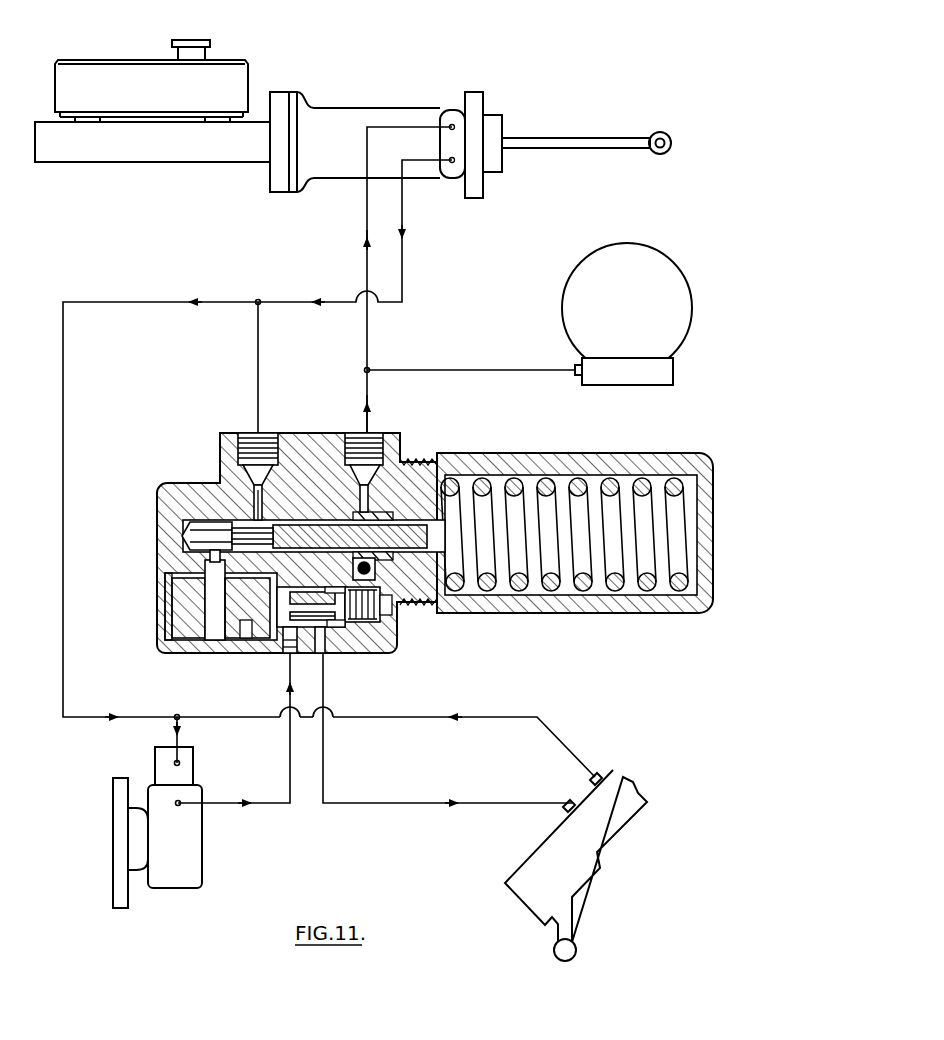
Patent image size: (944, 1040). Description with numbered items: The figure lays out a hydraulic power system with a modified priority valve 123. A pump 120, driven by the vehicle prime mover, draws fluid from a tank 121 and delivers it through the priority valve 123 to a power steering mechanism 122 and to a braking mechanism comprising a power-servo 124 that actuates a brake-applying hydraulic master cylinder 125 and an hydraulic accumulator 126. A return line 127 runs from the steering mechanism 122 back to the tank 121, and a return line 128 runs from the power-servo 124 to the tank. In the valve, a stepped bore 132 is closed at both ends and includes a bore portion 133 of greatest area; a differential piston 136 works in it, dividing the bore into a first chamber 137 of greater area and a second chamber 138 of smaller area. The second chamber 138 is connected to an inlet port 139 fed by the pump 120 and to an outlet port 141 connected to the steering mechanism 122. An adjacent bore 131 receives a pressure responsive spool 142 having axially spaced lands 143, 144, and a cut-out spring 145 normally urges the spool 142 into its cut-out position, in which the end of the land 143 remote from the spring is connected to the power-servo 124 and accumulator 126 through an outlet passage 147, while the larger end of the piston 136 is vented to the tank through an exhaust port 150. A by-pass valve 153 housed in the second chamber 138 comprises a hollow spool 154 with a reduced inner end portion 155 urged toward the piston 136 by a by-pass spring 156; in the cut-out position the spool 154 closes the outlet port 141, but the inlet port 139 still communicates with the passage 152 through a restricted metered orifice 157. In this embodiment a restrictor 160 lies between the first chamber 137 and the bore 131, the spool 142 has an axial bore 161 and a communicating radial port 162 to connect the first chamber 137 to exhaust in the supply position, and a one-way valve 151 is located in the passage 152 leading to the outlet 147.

The pump 120 is at (180, 878).
The tank 121 is at (183, 769).
The power steering mechanism 122 is at (535, 893).
The priority valve 123 is at (443, 458).
The power-servo 124 is at (330, 128).
The hydraulic master cylinder 125 is at (218, 132).
The hydraulic accumulator 126 is at (663, 281).
The return line 127 is at (498, 717).
The return line 128 is at (118, 302).
The bore 131 is at (190, 546).
The bore 132 is at (192, 653).
The bore portion 133 is at (272, 653).
The differential piston 136 is at (218, 655).
The first chamber 137 is at (205, 580).
The second chamber 138 is at (295, 640).
The inlet port 139 is at (318, 712).
The outlet port 141 is at (243, 448).
The spool 142 is at (305, 520).
The land 143 is at (228, 480).
The land 144 is at (340, 500).
The cut-out spring 145 is at (679, 480).
The outlet passage 147 is at (372, 460).
The exhaust port 150 is at (270, 440).
The one-way valve 151 is at (374, 572).
The passage 152 is at (380, 610).
The by-pass valve 153 is at (345, 640).
The hollow spool 154 is at (378, 630).
The inner end portion 155 is at (292, 632).
The by-pass spring 156 is at (385, 625).
The metered orifice 157 is at (322, 655).
The restrictor 160 is at (190, 530).
The axial bore 161 is at (224, 490).
The radial port 162 is at (250, 490).